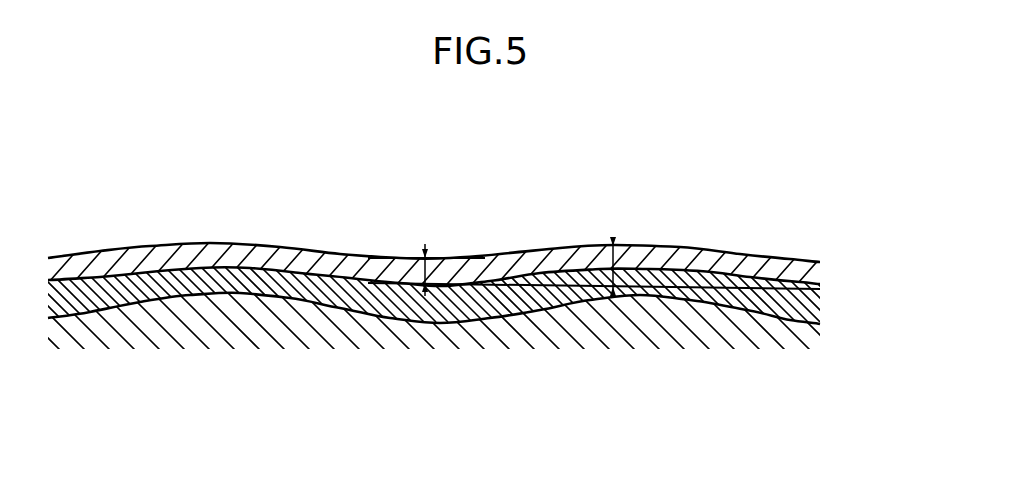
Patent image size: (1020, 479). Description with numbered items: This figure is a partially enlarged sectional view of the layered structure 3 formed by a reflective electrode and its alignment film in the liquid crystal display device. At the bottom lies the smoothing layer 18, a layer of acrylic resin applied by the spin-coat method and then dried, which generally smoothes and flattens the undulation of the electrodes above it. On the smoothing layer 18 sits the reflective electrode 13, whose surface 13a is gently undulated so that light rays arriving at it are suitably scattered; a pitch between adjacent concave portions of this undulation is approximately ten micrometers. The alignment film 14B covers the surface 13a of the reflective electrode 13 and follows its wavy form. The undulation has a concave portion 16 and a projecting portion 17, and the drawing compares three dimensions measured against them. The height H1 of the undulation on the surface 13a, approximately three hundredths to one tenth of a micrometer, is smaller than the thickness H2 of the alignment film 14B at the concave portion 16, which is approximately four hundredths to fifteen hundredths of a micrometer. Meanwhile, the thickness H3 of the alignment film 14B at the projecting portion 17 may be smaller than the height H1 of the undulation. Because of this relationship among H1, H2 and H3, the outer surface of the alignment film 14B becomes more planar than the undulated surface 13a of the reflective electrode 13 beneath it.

The laminated structure (light transmissive member) 3 is at (448, 296).
The reflective electrode 13 is at (808, 302).
The surface of reflective electrode 13a is at (746, 283).
The alignment film 14B is at (794, 259).
The concave portion 16 is at (402, 243).
The projecting portion 17 is at (656, 236).
The smoothing layer 18 is at (805, 337).
The height of undulation H1 is at (630, 282).
The thickness of alignment film at concave portion H2 is at (452, 290).
The thickness of alignment film at projecting portion H3 is at (628, 245).